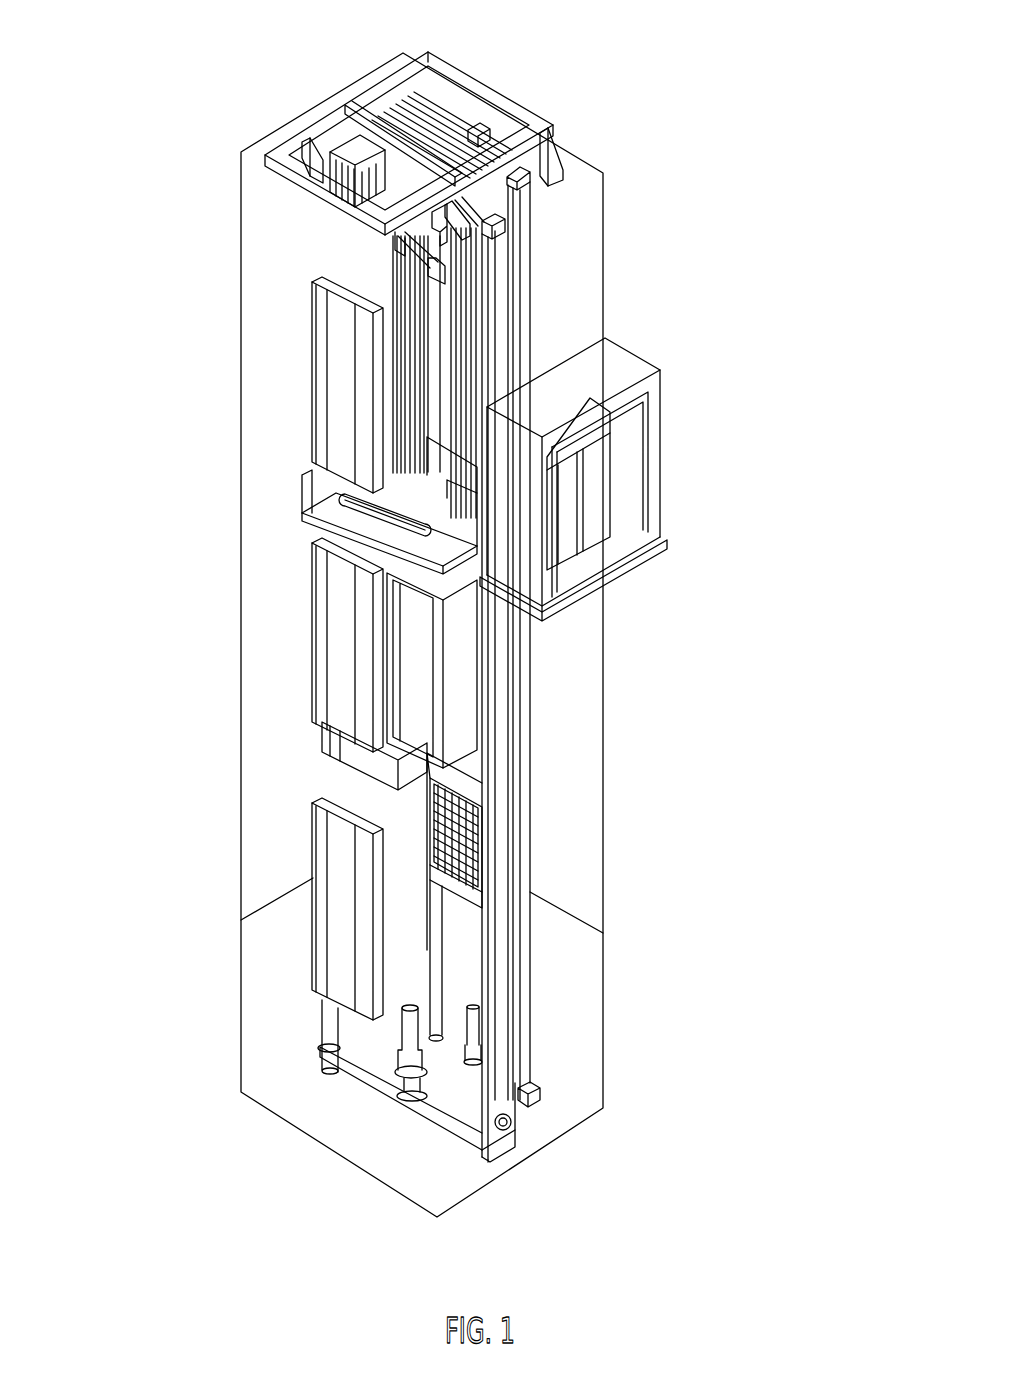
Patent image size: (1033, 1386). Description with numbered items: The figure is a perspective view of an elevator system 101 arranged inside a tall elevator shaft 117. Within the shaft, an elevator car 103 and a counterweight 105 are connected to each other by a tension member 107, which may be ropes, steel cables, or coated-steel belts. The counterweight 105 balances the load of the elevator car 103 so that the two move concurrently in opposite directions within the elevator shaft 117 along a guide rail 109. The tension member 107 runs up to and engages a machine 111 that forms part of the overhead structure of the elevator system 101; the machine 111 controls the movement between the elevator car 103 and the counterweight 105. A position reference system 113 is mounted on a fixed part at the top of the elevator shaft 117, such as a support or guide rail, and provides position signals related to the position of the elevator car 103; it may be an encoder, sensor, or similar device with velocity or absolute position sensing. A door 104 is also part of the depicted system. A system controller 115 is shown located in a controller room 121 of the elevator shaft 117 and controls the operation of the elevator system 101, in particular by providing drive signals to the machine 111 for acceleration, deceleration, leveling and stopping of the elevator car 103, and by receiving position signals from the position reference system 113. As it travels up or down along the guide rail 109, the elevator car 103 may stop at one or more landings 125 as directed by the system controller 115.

The elevator system 101 is at (620, 109).
The elevator car 103 is at (428, 681).
The door 104 is at (340, 690).
The counterweight 105 is at (484, 852).
The tension member 107 is at (428, 386).
The guide rail 109 is at (504, 775).
The machine 111 is at (340, 145).
The position reference system 113 is at (500, 234).
The system controller 115 is at (604, 489).
The elevator shaft 117 is at (283, 770).
The controller room 121 is at (663, 370).
The landings 125 is at (310, 367).